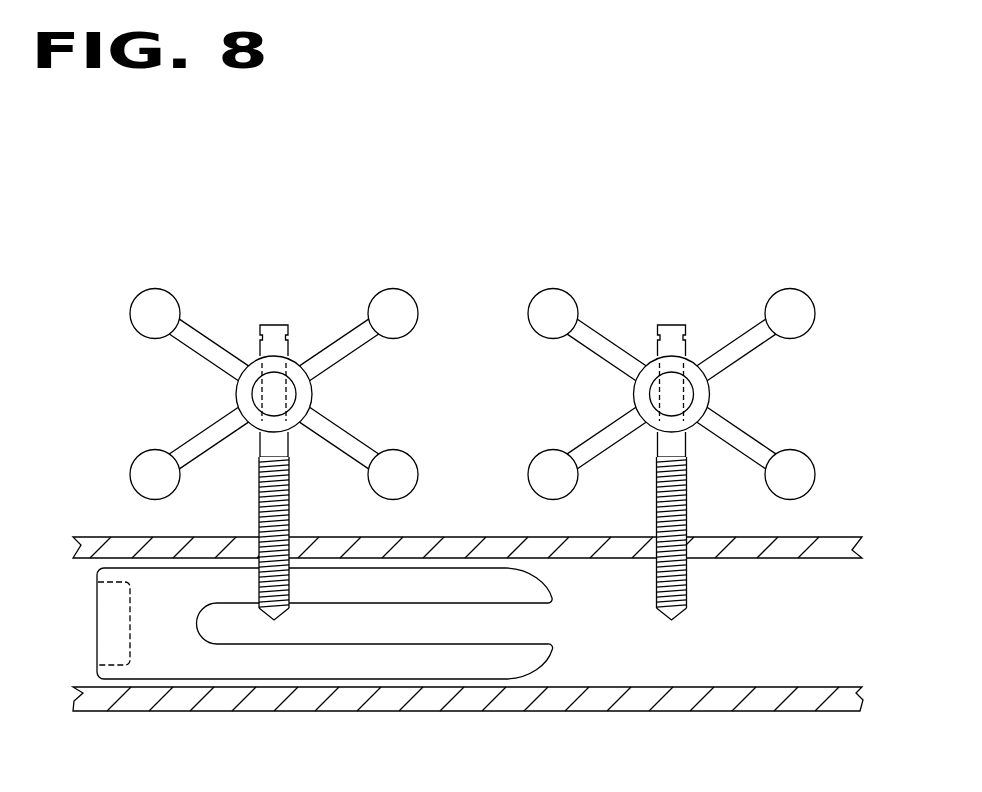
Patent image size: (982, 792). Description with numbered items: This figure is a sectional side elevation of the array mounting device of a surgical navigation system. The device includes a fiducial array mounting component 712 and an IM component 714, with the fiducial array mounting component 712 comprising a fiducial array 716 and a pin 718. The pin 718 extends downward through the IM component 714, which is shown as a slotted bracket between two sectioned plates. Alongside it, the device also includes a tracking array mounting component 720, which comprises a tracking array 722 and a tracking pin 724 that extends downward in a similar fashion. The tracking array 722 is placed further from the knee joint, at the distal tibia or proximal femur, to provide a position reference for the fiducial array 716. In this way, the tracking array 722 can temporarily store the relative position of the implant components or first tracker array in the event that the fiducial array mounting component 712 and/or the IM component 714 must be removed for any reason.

The fiducial array mounting component 712 is at (259, 432).
The IM component 714 is at (448, 580).
The fiducial array 716 is at (298, 389).
The pin 718 is at (273, 323).
The tracking array mounting component 720 is at (672, 432).
The tracking array 722 is at (700, 393).
The tracking pin 724 is at (672, 323).